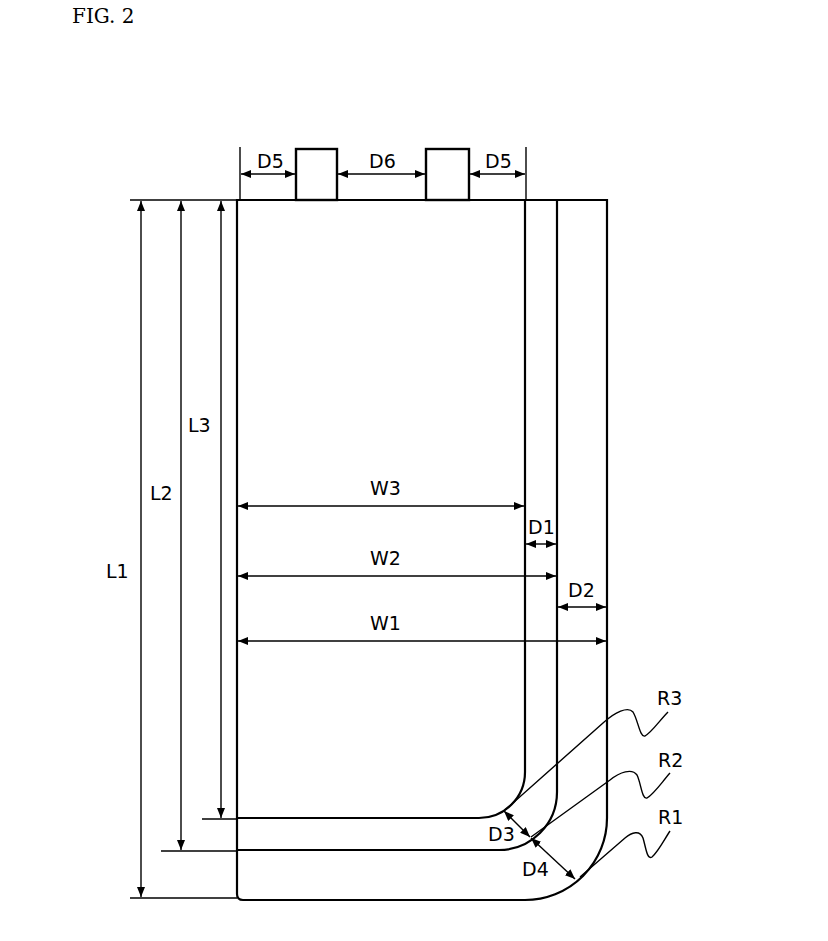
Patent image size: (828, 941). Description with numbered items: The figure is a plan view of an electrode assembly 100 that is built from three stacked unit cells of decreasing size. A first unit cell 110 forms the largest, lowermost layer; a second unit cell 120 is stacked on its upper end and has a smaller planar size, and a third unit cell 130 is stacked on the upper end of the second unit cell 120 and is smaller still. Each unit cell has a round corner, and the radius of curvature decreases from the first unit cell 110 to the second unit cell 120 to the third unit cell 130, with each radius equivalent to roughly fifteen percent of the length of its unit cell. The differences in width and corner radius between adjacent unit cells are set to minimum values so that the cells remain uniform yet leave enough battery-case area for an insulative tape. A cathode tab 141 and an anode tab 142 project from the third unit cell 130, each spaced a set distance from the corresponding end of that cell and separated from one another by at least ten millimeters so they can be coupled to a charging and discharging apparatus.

The electrode assembly 100 is at (125, 141).
The first unit cell 110 is at (607, 430).
The second unit cell 120 is at (557, 387).
The third unit cell 130 is at (525, 327).
The cathode tab 141 is at (317, 149).
The anode tab 142 is at (453, 149).